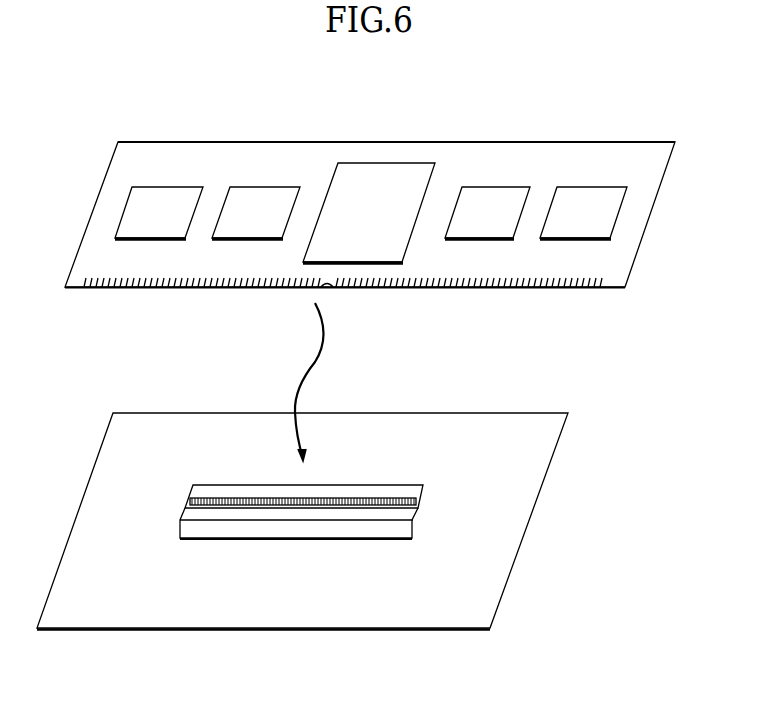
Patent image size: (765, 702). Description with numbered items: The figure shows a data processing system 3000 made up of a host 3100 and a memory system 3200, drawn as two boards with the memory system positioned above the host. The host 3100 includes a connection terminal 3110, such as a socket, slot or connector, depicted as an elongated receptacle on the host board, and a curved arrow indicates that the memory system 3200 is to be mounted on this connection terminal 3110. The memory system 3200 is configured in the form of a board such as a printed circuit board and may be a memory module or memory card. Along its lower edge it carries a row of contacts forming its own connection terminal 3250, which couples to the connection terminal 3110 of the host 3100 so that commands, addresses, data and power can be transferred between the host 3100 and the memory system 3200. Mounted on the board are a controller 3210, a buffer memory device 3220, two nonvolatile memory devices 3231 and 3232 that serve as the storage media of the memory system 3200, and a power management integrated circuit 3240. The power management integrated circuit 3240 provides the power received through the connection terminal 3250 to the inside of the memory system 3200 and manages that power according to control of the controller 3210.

The data processing system 3000 is at (220, 107).
The memory system 3200 is at (370, 236).
The power management integrated circuit 3240 is at (159, 213).
The buffer memory device 3220 is at (256, 213).
The controller 3210 is at (369, 213).
The nonvolatile memory device 3231 is at (487, 213).
The nonvolatile memory device 3232 is at (583, 213).
The connection terminal 3250 is at (102, 289).
The host 3100 is at (302, 521).
The connection terminal 3110 is at (447, 480).